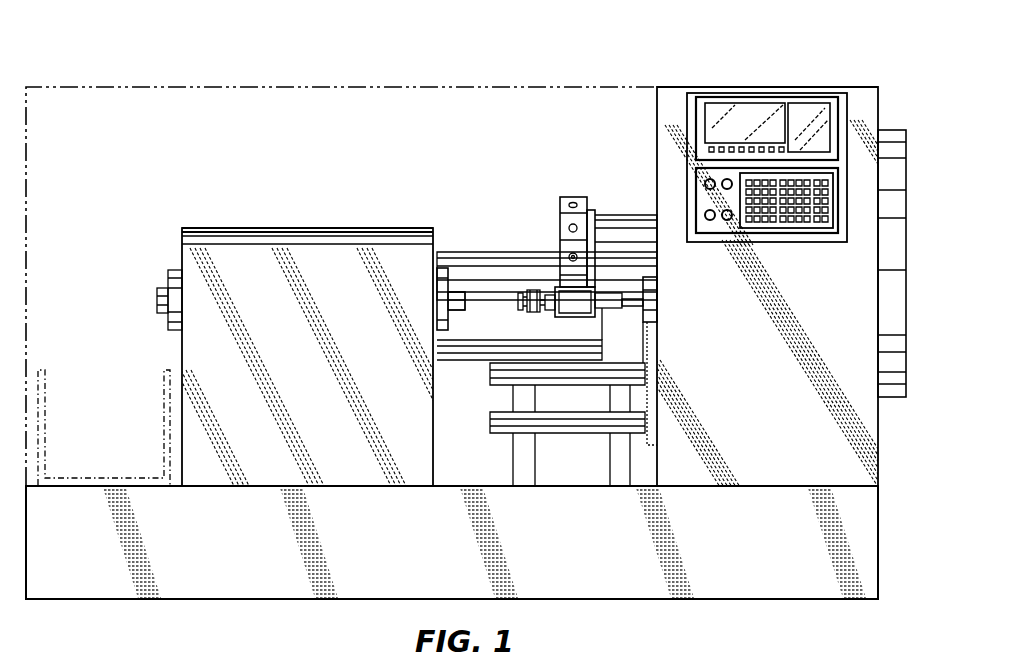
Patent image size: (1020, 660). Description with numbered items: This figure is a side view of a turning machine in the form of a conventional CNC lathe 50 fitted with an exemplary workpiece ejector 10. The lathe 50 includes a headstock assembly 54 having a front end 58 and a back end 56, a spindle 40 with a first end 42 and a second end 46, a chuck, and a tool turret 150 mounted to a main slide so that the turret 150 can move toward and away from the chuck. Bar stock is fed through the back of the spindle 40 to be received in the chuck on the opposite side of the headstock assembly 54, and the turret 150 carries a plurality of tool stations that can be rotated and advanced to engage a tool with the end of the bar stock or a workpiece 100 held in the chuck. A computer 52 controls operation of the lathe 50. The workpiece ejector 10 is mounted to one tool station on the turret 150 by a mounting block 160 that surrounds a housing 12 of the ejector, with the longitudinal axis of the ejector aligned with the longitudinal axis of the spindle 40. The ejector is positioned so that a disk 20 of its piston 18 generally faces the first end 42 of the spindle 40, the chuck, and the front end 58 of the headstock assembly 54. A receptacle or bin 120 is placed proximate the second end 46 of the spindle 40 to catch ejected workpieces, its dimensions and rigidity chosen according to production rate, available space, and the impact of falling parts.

The lathe 50 is at (148, 46).
The computer 52 is at (772, 87).
The headstock assembly 54 is at (312, 226).
The back end 56 is at (185, 228).
The front end 58 is at (430, 229).
The first end 42 is at (458, 277).
The piston 18 is at (527, 290).
The tool turret 150 is at (571, 195).
The housing 12 is at (607, 297).
The workpiece ejector 10 is at (613, 313).
The spindle 40 is at (168, 268).
The second end 46 is at (162, 316).
The bin 120 is at (48, 390).
The workpiece 100 is at (458, 312).
The disk 20 is at (513, 303).
The mounting block 160 is at (575, 317).